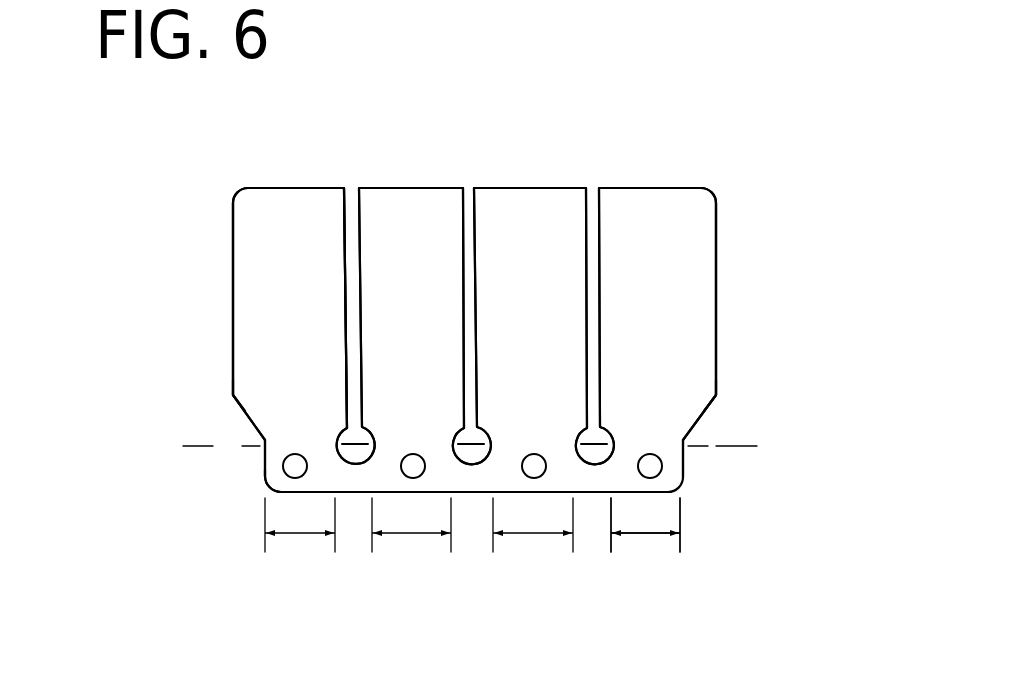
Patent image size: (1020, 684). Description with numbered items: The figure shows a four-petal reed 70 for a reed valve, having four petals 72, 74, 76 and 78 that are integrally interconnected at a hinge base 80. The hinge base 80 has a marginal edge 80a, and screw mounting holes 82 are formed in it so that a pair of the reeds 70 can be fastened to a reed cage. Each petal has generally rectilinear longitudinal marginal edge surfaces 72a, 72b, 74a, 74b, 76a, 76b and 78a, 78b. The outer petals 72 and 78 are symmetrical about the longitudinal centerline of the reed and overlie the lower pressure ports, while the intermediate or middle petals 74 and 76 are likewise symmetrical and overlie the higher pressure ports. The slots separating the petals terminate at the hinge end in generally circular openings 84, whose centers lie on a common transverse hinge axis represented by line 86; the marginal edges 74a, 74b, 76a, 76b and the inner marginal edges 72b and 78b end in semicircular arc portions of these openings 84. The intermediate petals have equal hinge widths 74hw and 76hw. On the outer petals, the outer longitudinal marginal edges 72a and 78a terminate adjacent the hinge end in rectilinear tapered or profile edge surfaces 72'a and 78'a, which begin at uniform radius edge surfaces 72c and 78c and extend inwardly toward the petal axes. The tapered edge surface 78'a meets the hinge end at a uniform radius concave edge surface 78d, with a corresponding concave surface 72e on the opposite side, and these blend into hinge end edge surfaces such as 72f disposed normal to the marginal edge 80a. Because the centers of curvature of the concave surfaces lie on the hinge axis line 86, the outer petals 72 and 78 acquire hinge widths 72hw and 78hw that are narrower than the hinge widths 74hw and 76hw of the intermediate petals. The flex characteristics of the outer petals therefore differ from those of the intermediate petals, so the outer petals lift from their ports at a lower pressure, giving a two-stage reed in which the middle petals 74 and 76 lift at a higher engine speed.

The four-petal reed 70 is at (205, 160).
The outer petal 72 is at (290, 284).
The outer longitudinal marginal edge 72a is at (233, 245).
The inner longitudinal marginal edge 72b is at (352, 212).
The uniform radius edge surface 72c is at (235, 395).
The tapered edge surface 72'a is at (202, 417).
The lower side edge of first petal 72e is at (263, 458).
The hinge end edge surface 72f is at (268, 480).
The transverse hinge axis line 86 is at (205, 455).
The intermediate petal 74 is at (400, 212).
The longitudinal marginal edge surface 74a is at (357, 225).
The longitudinal marginal edge surface 74b is at (469, 225).
The intermediate petal 76 is at (523, 205).
The longitudinal marginal edge surface 76a is at (478, 225).
The longitudinal marginal edge surface 76b is at (592, 225).
The outer petal 78 is at (657, 272).
The outer longitudinal marginal edge 78a is at (717, 222).
The inner longitudinal marginal edge 78b is at (601, 225).
The uniform radius edge surface 78c is at (717, 394).
The tapered edge surface 78'a is at (740, 415).
The uniform radius concave edge surface 78d is at (684, 444).
The hinge base 80 is at (672, 475).
The marginal edge 80a is at (645, 525).
The mounting holes 82 is at (293, 470).
The circular openings 84 is at (352, 461).
The hinge width 72hw is at (298, 538).
The hinge width 74hw is at (410, 538).
The hinge width 76hw is at (528, 538).
The hinge width 78hw is at (647, 538).